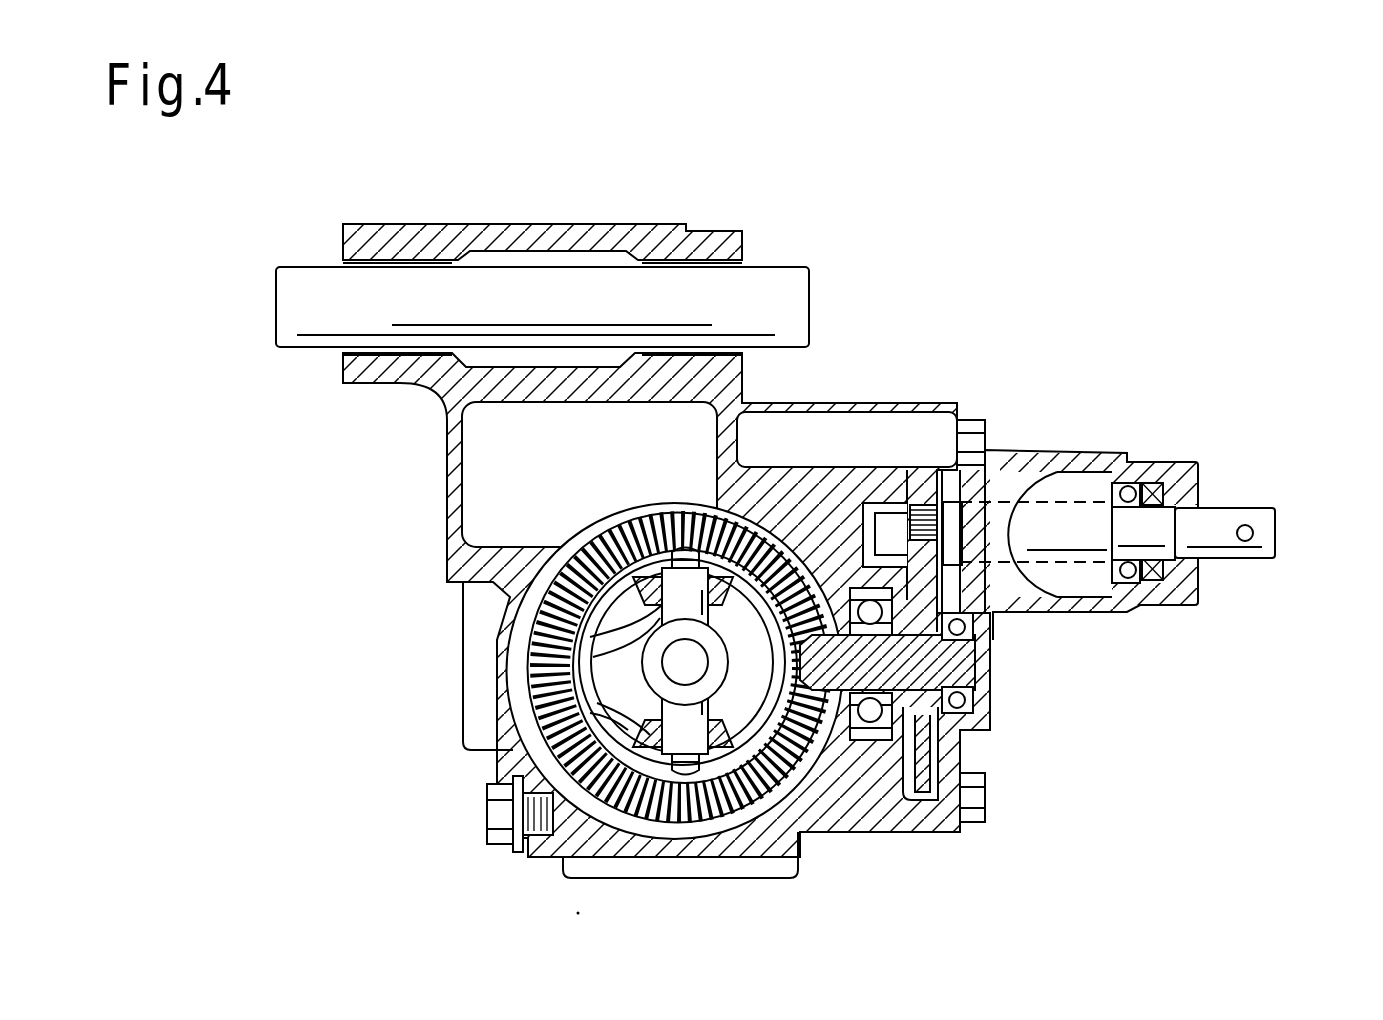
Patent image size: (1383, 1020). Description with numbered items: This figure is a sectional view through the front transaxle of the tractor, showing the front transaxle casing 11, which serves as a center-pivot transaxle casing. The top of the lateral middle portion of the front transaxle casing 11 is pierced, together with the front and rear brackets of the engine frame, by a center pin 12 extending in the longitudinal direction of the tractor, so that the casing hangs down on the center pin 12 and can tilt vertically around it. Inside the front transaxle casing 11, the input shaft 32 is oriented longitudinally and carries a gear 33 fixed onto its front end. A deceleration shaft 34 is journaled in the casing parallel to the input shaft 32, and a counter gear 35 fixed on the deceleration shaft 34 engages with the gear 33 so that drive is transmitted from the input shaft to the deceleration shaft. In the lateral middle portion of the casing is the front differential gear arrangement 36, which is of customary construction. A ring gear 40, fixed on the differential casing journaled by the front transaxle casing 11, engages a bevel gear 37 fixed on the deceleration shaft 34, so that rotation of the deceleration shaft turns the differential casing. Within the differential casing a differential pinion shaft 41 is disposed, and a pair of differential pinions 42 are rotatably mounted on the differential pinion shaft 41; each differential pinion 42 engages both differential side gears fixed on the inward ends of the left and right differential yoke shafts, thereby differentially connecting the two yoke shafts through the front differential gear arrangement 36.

The front transaxle casing 11 is at (477, 727).
The center pin 12 is at (795, 308).
The input shaft 32 is at (1267, 533).
The gear 33 is at (925, 470).
The deceleration shaft 34 is at (993, 635).
The counter gear 35 is at (930, 837).
The front differential gear arrangement 36 is at (577, 512).
The bevel gear 37 is at (875, 805).
The ring gear 40 is at (810, 835).
The differential pinion shaft 41 is at (642, 655).
The differential pinions 42 is at (640, 592).